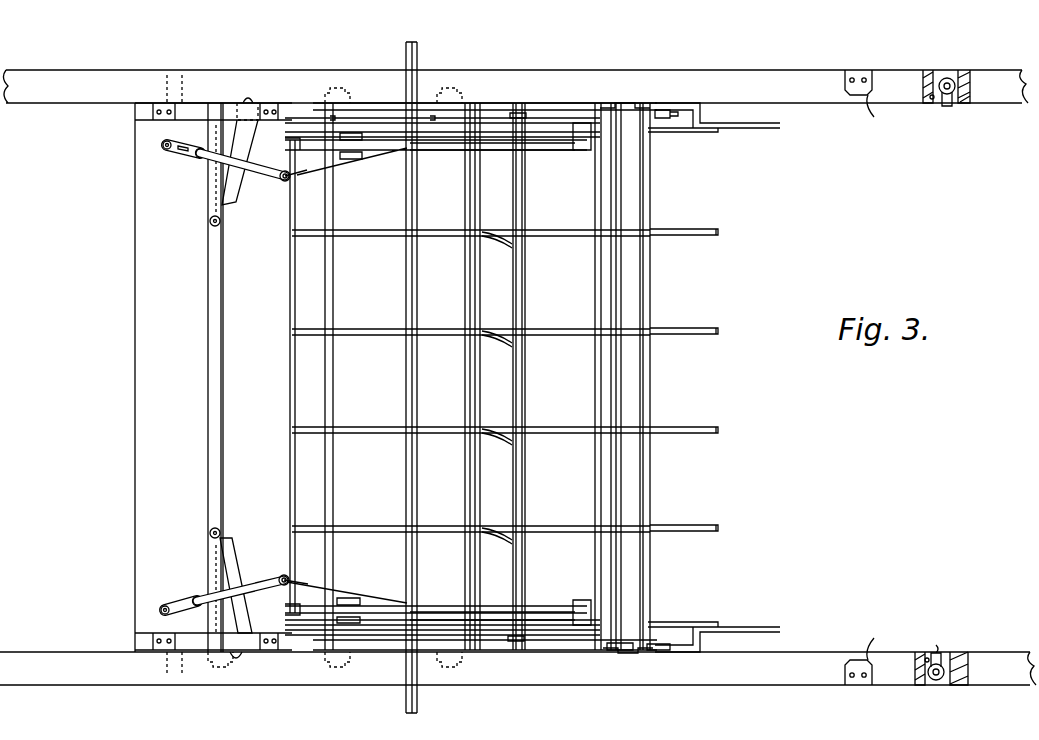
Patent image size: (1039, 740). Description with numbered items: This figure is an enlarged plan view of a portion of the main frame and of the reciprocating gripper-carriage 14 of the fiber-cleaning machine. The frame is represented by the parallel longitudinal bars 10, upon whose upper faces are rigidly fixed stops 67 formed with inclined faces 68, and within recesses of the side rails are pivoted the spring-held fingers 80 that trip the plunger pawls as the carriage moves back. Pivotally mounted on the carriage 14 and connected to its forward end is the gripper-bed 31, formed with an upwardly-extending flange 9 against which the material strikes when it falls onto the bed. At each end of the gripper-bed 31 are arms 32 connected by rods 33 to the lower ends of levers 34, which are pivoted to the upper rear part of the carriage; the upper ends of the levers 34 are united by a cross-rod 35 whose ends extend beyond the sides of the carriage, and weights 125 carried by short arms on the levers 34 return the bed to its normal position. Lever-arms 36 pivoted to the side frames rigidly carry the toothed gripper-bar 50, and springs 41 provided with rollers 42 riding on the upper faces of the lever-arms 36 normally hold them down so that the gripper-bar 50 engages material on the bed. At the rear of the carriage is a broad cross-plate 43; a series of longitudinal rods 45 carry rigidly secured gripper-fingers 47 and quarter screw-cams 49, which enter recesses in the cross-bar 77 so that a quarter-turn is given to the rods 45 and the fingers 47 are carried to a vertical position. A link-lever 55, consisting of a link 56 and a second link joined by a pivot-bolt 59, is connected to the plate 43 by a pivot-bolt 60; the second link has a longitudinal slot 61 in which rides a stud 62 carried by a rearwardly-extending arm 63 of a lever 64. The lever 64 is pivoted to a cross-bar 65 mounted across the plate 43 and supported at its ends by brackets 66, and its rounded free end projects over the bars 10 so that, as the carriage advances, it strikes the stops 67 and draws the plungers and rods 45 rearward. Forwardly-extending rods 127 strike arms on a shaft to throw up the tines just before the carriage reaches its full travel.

The upwardly-extending flange 9 is at (618, 386).
The longitudinal bars 10 is at (518, 377).
The reciprocating gripper-carriage 14 is at (330, 376).
The gripper-bed 31 is at (593, 178).
The arms 32 is at (578, 156).
The rods 33 is at (550, 152).
The levers 34 is at (383, 150).
The cross-rod 35 is at (416, 376).
The lever-arms 36 is at (658, 122).
The springs 41 is at (490, 114).
The rollers 42 is at (535, 114).
The cross-plate 43 is at (213, 377).
The longitudinal rods 45 is at (471, 392).
The gripper-fingers 47 is at (720, 236).
The quarter screw-cams 49 is at (504, 244).
The toothed gripper-bar 50 is at (654, 392).
The link-lever 55 is at (280, 184).
The link 56 is at (301, 373).
The pivot-bolt 59 is at (292, 182).
The pivot-bolt 60 is at (164, 148).
The longitudinal slot 61 is at (152, 195).
The stud 62 is at (188, 152).
The rearwardly-extending arm 63 is at (196, 147).
The lever 64 is at (230, 570).
The cross-bar 65 is at (208, 378).
The brackets 66 is at (212, 94).
The stops 67 is at (828, 670).
The inclined faces 68 is at (881, 377).
The cross-bar 77 is at (484, 297).
The fingers 80 is at (948, 106).
The weights 125 is at (355, 160).
The forwardly-extending rods 127 is at (714, 377).